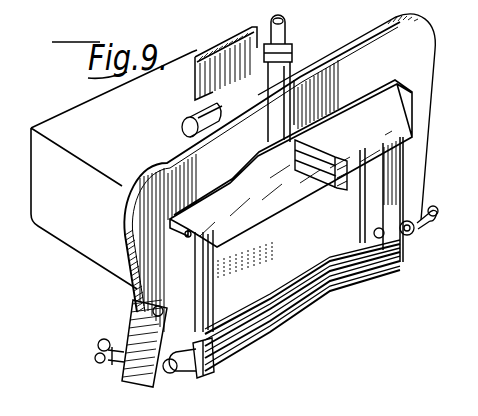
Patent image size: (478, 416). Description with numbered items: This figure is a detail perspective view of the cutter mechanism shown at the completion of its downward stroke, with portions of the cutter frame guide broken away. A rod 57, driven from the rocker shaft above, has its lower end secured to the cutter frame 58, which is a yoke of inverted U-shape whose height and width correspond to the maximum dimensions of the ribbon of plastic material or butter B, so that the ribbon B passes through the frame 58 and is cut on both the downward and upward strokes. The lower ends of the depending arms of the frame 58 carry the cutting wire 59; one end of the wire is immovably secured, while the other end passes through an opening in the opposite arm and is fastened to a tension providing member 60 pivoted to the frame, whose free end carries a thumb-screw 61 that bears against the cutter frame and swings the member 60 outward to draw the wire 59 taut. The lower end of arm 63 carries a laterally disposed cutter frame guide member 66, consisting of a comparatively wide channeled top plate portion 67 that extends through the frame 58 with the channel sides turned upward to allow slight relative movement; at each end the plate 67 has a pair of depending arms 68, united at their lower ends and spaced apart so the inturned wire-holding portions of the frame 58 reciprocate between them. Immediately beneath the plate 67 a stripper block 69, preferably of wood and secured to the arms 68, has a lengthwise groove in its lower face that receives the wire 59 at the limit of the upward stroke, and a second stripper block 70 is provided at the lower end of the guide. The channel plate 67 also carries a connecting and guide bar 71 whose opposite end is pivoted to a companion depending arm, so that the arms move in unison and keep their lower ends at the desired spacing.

The ribbon of plastic material or butter B is at (47, 128).
The rod 57 is at (281, 22).
The cutter frame 58 is at (338, 57).
The cutting element or wire 59 is at (251, 322).
The tension providing member 60 is at (137, 380).
The thumb-screw 61 is at (101, 366).
The arm 63 is at (222, 62).
The cutter frame guide member 66 is at (183, 116).
The channeled top plate portion 67 is at (317, 90).
The depending arms 68 is at (178, 273).
The stripper block 69 is at (392, 135).
The stripper block 70 is at (217, 360).
The connecting and guide bar 71 is at (338, 189).